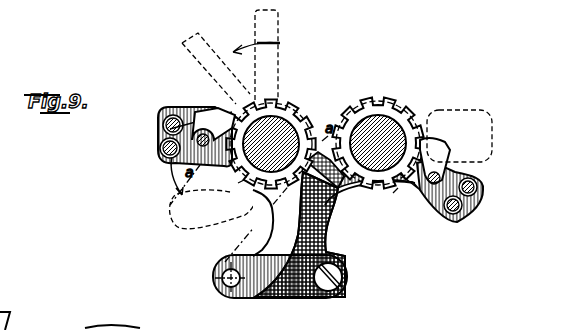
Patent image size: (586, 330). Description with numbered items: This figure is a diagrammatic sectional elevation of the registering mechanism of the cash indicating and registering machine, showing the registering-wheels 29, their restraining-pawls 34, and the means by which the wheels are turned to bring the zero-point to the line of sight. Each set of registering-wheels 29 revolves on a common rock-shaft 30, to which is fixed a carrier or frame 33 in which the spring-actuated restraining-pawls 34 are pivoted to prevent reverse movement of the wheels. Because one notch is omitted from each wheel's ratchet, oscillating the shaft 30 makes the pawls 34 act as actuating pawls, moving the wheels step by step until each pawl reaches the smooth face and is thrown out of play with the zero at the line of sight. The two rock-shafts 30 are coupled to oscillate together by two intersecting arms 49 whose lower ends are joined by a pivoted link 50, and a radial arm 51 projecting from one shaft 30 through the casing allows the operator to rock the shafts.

The registering-wheel 29 is at (238, 183).
The rock-shaft 30 is at (283, 128).
The carrier or frame 33 is at (157, 132).
The restraining-pawl 34 is at (215, 108).
The arm 49 is at (272, 224).
The pivoted link 50 is at (300, 298).
The radial arm 51 is at (278, 64).